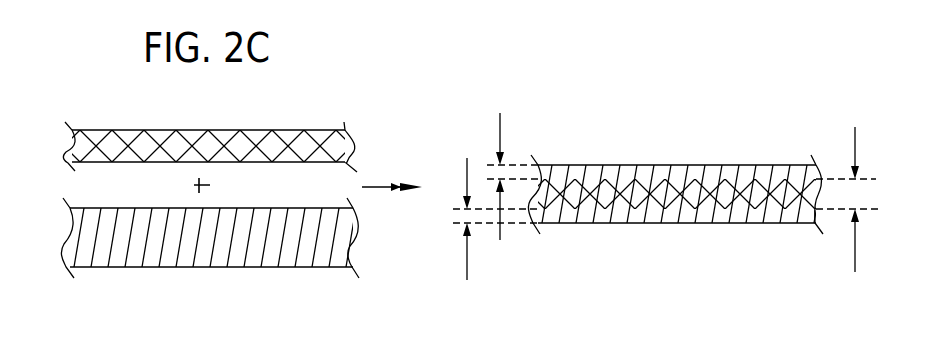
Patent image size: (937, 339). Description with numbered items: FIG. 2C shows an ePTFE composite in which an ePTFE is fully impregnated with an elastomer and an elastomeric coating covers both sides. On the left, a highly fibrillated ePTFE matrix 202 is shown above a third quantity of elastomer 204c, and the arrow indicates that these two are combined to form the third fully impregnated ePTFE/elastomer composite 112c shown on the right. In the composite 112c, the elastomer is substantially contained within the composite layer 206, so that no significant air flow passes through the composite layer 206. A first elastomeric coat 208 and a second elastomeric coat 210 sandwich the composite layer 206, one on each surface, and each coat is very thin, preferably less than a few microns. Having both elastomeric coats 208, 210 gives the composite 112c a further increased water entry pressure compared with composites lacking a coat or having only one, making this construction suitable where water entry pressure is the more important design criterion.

The highly fibrillated ePTFE matrix 202 is at (156, 129).
The third quantity of elastomer 204c is at (250, 208).
The third fully impregnated ePTFE/elastomer composite 112c is at (641, 122).
The composite layer 206 is at (854, 187).
The first elastomeric coat 208 is at (464, 207).
The second elastomeric coat 210 is at (499, 165).